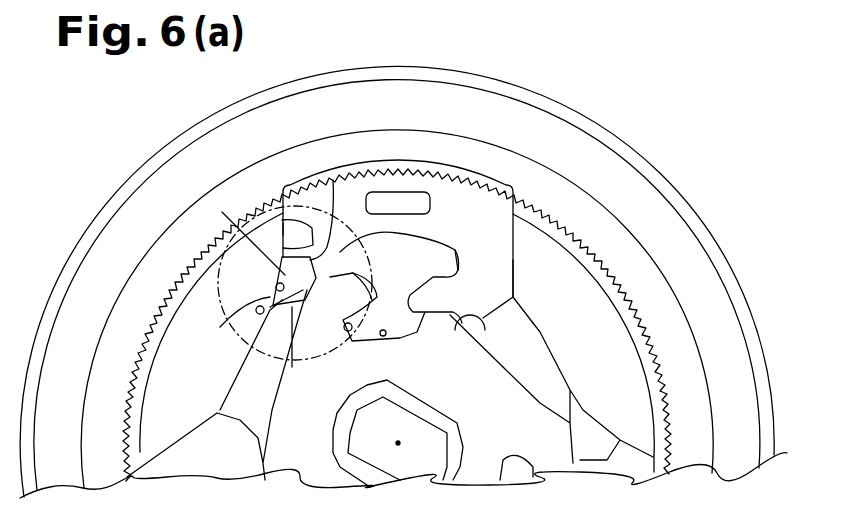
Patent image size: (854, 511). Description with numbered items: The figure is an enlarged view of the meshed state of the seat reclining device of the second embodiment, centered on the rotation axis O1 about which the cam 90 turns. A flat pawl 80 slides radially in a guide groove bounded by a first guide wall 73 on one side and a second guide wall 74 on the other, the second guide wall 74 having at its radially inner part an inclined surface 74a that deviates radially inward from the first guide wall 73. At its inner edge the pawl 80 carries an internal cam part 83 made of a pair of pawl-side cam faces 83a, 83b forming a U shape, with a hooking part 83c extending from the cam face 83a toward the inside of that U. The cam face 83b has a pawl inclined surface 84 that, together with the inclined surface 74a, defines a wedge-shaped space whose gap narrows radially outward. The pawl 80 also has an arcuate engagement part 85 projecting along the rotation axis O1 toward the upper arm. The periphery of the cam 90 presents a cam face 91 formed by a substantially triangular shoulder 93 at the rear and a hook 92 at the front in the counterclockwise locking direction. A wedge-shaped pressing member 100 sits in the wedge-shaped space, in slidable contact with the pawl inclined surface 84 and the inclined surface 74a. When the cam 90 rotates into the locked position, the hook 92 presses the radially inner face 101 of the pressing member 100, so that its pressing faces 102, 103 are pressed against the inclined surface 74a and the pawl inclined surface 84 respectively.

The first guide wall 73 is at (514, 250).
The second guide wall 74 is at (293, 215).
The inclined surface 74a is at (247, 312).
The pawl 80 is at (514, 284).
The internal cam part 83 is at (418, 338).
The pawl-side cam face 83a is at (475, 340).
The pawl-side cam face 83b is at (283, 225).
The hooking part 83c is at (430, 280).
The pawl inclined surface 84 is at (346, 332).
The engagement part 85 is at (403, 192).
The cam 90 is at (540, 383).
The cam face 91 is at (381, 337).
The hook 92 is at (363, 280).
The shoulder 93 is at (486, 328).
The pressing member 100 is at (302, 305).
The inner face 101 is at (260, 315).
The pressing face 102 is at (243, 313).
The pressing face 103 is at (330, 267).
The rotation axis O1 is at (398, 445).